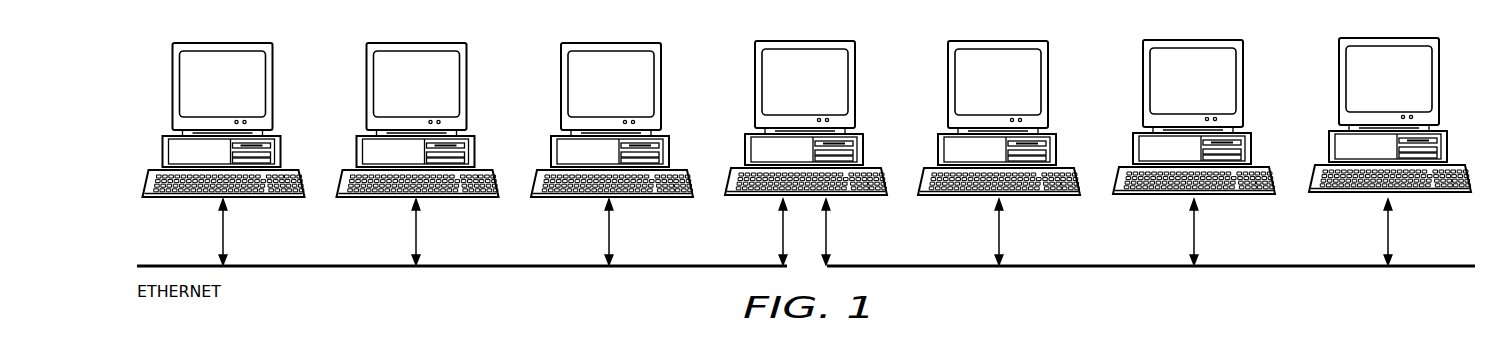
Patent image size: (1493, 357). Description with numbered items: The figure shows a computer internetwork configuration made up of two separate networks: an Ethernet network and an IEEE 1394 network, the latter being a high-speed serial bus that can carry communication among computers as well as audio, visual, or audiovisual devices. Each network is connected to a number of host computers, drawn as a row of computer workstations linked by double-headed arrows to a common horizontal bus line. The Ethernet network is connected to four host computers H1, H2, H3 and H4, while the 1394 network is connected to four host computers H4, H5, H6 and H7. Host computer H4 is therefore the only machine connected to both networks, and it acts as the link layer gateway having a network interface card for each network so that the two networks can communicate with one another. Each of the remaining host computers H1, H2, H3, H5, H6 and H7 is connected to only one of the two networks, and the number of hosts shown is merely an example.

The host computer H1 is at (224, 154).
The host computer H2 is at (418, 154).
The host computer H3 is at (612, 154).
The host computer H4 is at (806, 153).
The host computer H5 is at (999, 153).
The host computer H6 is at (1194, 152).
The host computer H7 is at (1390, 151).
The IEEE 1394 network 1394 is at (1151, 283).